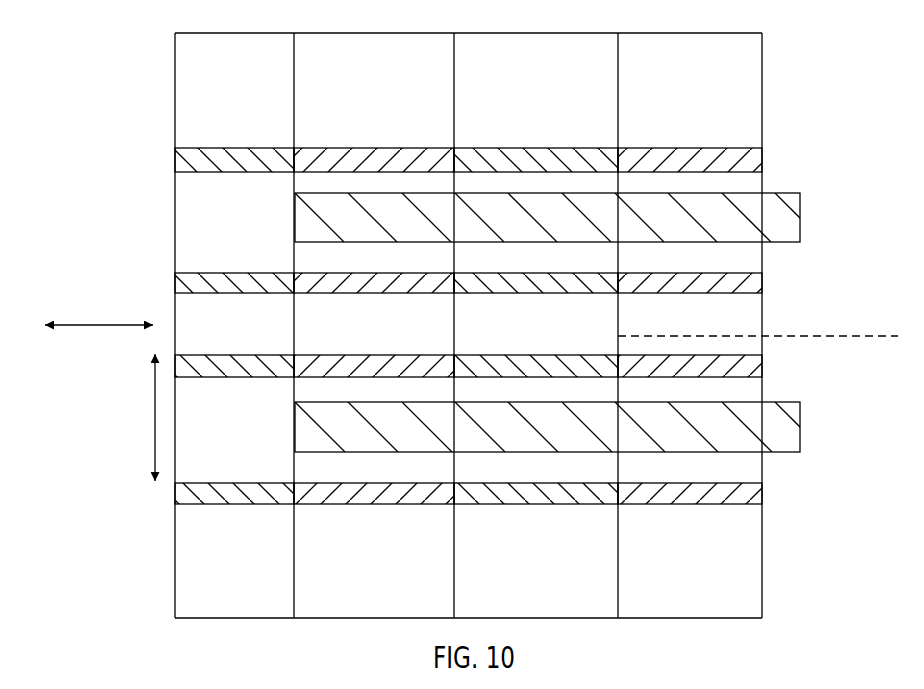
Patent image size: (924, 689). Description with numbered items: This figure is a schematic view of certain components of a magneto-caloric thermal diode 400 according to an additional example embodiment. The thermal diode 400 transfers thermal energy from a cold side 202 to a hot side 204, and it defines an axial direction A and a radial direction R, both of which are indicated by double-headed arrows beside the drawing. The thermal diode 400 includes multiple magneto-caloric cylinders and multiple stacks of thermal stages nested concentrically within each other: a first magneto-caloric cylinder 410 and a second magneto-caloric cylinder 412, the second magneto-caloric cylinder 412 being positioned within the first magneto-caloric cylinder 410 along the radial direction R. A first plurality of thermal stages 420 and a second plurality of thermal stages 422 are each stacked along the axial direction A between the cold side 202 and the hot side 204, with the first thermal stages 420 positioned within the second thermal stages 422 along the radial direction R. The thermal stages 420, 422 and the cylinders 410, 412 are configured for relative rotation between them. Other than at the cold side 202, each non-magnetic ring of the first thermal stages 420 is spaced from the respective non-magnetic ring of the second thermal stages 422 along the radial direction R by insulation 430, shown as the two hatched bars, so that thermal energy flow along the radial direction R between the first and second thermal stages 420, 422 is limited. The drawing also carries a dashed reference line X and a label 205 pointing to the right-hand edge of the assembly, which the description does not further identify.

The magneto-caloric thermal diode 400 is at (795, 70).
The first magneto-caloric cylinder 410 is at (762, 162).
The second magneto-caloric cylinder 412 is at (762, 281).
The first plurality of thermal stages 420 is at (265, 190).
The second plurality of thermal stages 422 is at (278, 307).
The insulation 430 is at (800, 222).
The side edge 205 is at (764, 387).
The cold side 202 is at (174, 621).
The hot side 204 is at (761, 621).
The axis X is at (872, 333).
The axial direction A is at (66, 329).
The radial direction R is at (155, 425).